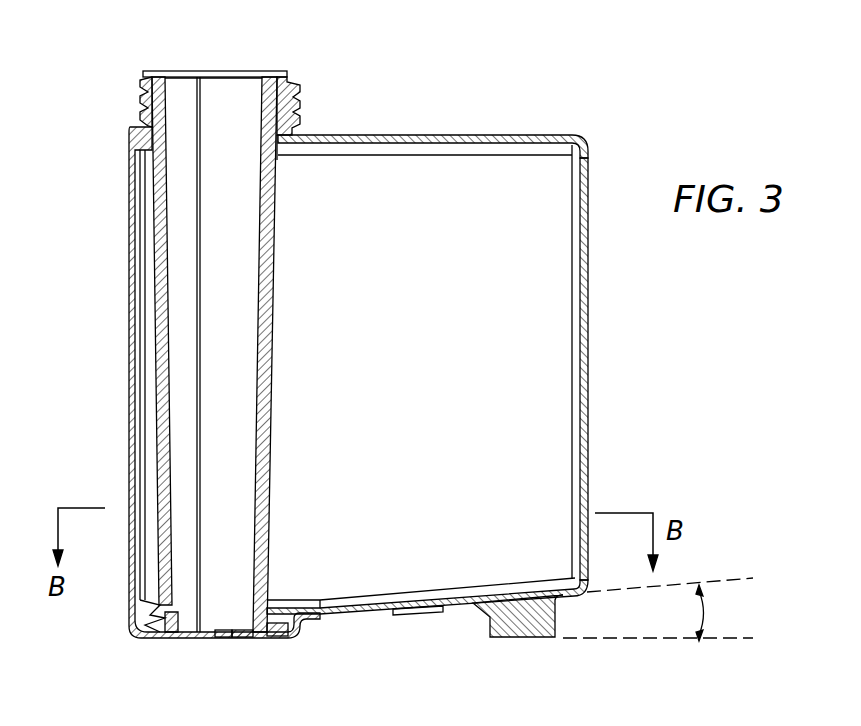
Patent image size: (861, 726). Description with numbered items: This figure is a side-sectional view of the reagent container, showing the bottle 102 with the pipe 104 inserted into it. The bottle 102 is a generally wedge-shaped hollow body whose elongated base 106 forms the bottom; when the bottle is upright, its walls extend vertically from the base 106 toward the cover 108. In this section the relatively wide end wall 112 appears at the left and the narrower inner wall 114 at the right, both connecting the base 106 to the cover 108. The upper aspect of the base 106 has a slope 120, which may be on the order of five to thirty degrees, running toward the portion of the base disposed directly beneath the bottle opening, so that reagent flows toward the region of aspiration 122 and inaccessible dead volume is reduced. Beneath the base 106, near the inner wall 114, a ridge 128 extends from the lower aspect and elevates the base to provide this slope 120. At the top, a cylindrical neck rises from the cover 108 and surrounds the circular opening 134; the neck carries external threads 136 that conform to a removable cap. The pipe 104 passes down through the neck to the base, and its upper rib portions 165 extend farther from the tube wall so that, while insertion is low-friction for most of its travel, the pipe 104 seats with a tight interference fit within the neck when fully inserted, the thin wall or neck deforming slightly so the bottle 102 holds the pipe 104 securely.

The bottle 102 is at (499, 335).
The pipe 104 is at (272, 300).
The base 106 is at (401, 598).
The cover 108 is at (403, 135).
The end wall 112 is at (131, 333).
The inner wall 114 is at (588, 327).
The slope 120 is at (702, 612).
The region of aspiration 122 is at (205, 640).
The ridge 128 is at (518, 618).
The opening 134 is at (206, 62).
The external threads 136 is at (137, 110).
The upper rib portions 165 is at (275, 170).